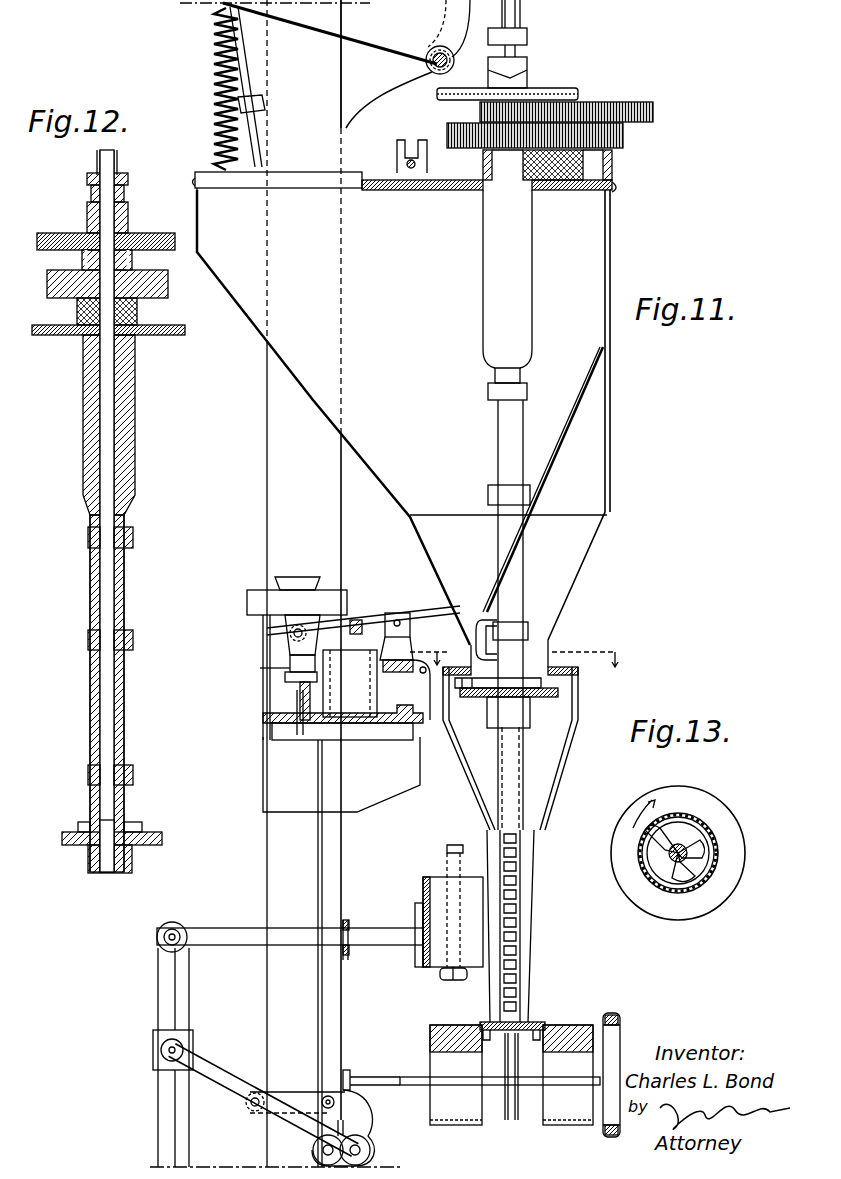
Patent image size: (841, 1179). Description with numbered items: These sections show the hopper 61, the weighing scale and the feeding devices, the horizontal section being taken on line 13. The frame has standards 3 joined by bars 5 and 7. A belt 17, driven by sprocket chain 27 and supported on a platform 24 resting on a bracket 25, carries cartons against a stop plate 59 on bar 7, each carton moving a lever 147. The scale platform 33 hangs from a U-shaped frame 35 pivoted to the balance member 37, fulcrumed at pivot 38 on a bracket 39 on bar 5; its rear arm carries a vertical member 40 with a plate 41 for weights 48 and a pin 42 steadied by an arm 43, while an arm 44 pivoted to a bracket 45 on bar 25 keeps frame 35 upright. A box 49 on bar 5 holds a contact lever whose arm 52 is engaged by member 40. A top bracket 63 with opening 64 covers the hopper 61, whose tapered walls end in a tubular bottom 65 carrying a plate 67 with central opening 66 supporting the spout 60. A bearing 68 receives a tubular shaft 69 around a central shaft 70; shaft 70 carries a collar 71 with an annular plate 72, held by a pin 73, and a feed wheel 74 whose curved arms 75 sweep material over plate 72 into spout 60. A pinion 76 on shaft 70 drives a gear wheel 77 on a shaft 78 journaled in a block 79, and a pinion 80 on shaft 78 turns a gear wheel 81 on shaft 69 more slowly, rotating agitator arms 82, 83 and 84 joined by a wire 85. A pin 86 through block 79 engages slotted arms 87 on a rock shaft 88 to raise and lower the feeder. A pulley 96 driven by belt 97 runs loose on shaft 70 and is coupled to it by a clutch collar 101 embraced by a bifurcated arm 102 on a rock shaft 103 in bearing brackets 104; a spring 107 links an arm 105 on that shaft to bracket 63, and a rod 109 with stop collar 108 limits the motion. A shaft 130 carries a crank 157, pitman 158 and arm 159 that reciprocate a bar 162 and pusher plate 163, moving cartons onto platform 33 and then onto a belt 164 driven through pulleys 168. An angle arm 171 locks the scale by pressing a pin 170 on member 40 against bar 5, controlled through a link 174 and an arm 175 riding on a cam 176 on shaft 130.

In FIG. 11, the standards 3 is at (290, 495).
In FIG. 11, the frame bar 5 is at (268, 724).
In FIG. 11, the frame bar 7 is at (348, 932).
In FIG. 11, the section line 13 is at (524, 651).
In FIG. 11, the belt 17 is at (428, 1028).
In FIG. 11, the platform 24 is at (430, 1046).
In FIG. 11, the bar or bracket 25 is at (348, 976).
In FIG. 11, the sprocket chain 27 is at (522, 853).
In FIG. 11, the platform 33 is at (525, 1022).
In FIG. 11, the U-shaped frame 35 is at (530, 936).
In FIG. 11, the balance member 37 is at (420, 620).
In FIG. 11, the pivot 38 is at (392, 612).
In FIG. 11, the bracket 39 is at (385, 626).
In FIG. 11, the vertical member 40 is at (285, 630).
In FIG. 11, the platform or plate 41 is at (247, 600).
In FIG. 11, the pin 42 is at (300, 706).
In FIG. 11, the arm 43 is at (298, 740).
In FIG. 11, the arm 44 is at (415, 1086).
In FIG. 11, the bracket 45 is at (365, 1078).
In FIG. 11, the weights 48 is at (297, 588).
In FIG. 11, the box 49 is at (357, 706).
In FIG. 11, the arm 52 is at (290, 684).
In FIG. 11, the stop plate 59 is at (438, 878).
In FIG. 11, the discharge spout 60 is at (560, 764).
In FIG. 13, the discharge spout 60 is at (720, 890).
In FIG. 11, the hopper 61 is at (290, 385).
In FIG. 12, the top bracket 63 is at (155, 334).
In FIG. 11, the top bracket 63 is at (380, 190).
In FIG. 11, the opening 64 is at (293, 178).
In FIG. 11, the tubular bottom portion 65 is at (558, 643).
In FIG. 13, the tubular bottom portion 65 is at (650, 865).
In FIG. 11, the central opening 66 is at (572, 682).
In FIG. 11, the horizontal plate 67 is at (572, 668).
In FIG. 12, the bearing 68 is at (128, 390).
In FIG. 11, the bearing 68 is at (492, 290).
In FIG. 12, the tubular shaft 69 is at (118, 580).
In FIG. 11, the tubular shaft 69 is at (498, 196).
In FIG. 12, the central shaft 70 is at (110, 445).
In FIG. 13, the central shaft 70 is at (688, 890).
In FIG. 12, the collar 71 is at (133, 852).
In FIG. 11, the collar 71 is at (515, 706).
In FIG. 12, the annular flange or plate 72 is at (160, 838).
In FIG. 11, the annular flange or plate 72 is at (480, 700).
In FIG. 13, the annular flange or plate 72 is at (660, 882).
In FIG. 11, the pin 73 is at (445, 722).
In FIG. 12, the feed wheel 74 is at (140, 826).
In FIG. 11, the feed wheel 74 is at (530, 702).
In FIG. 13, the feed wheel 74 is at (690, 830).
In FIG. 12, the curved arms 75 is at (128, 825).
In FIG. 11, the curved arms 75 is at (543, 685).
In FIG. 13, the curved arms 75 is at (700, 862).
In FIG. 12, the pinion 76 is at (132, 262).
In FIG. 11, the pinion 76 is at (478, 112).
In FIG. 11, the gear wheel 77 is at (655, 108).
In FIG. 11, the shaft 78 is at (614, 160).
In FIG. 11, the block 79 is at (616, 184).
In FIG. 11, the pinion 80 is at (625, 134).
In FIG. 12, the gear wheel 81 is at (165, 285).
In FIG. 11, the gear wheel 81 is at (480, 132).
In FIG. 12, the arm 82 is at (135, 537).
In FIG. 11, the arm 82 is at (552, 384).
In FIG. 12, the arm 83 is at (88, 641).
In FIG. 11, the arm 83 is at (490, 488).
In FIG. 12, the arm 84 is at (88, 776).
In FIG. 11, the arm 84 is at (520, 620).
In FIG. 11, the wire 85 is at (545, 437).
In FIG. 11, the pin 86 is at (548, 190).
In FIG. 12, the arms 87 is at (137, 312).
In FIG. 11, the arms 87 is at (445, 190).
In FIG. 11, the rock shaft 88 is at (408, 163).
In FIG. 12, the pulley 96 is at (62, 240).
In FIG. 11, the pulley 96 is at (548, 92).
In FIG. 11, the belt 97 is at (580, 93).
In FIG. 12, the clutch collar 101 is at (128, 215).
In FIG. 11, the clutch collar 101 is at (527, 70).
In FIG. 11, the bifurcated arm 102 is at (527, 36).
In FIG. 11, the rock shaft 103 is at (436, 46).
In FIG. 11, the bearing brackets 104 is at (365, 82).
In FIG. 11, the arm 105 is at (318, 27).
In FIG. 11, the spring 107 is at (215, 55).
In FIG. 11, the stop collar 108 is at (262, 104).
In FIG. 11, the rod 109 is at (243, 78).
In FIG. 11, the shaft 130 is at (425, 1146).
In FIG. 11, the lever 147 is at (455, 982).
In FIG. 11, the crank 157 is at (312, 1152).
In FIG. 11, the pitman 158 is at (205, 1065).
In FIG. 11, the arm 159 is at (158, 996).
In FIG. 11, the horizontal bar 162 is at (228, 930).
In FIG. 11, the pusher plate 163 is at (420, 884).
In FIG. 11, the belt 164 is at (570, 1025).
In FIG. 11, the pulleys 168 is at (622, 1026).
In FIG. 11, the pin 170 is at (275, 672).
In FIG. 11, the angle arm 171 is at (265, 662).
In FIG. 11, the bar or link 174 is at (342, 830).
In FIG. 11, the arm 175 is at (293, 1098).
In FIG. 11, the cam 176 is at (372, 1136).